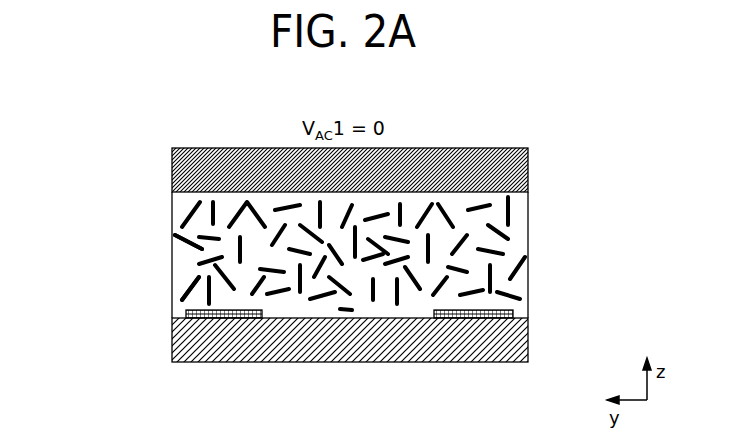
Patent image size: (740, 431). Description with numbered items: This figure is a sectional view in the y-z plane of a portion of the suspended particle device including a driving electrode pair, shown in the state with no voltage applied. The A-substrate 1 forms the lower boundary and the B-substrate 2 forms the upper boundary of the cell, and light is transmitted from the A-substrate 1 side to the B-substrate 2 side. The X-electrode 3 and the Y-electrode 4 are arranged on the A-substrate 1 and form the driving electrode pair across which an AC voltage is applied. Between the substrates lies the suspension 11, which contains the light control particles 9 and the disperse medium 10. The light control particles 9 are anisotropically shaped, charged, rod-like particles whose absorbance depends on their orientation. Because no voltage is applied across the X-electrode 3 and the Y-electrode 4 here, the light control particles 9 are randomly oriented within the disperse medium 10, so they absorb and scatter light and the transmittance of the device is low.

The A-substrate 1 is at (172, 337).
The B-substrate 2 is at (172, 171).
The X-electrode 3 is at (188, 314).
The Y-electrode 4 is at (513, 313).
The light control particles 9 is at (208, 265).
The disperse medium 10 is at (195, 275).
The suspension 11 is at (92, 193).